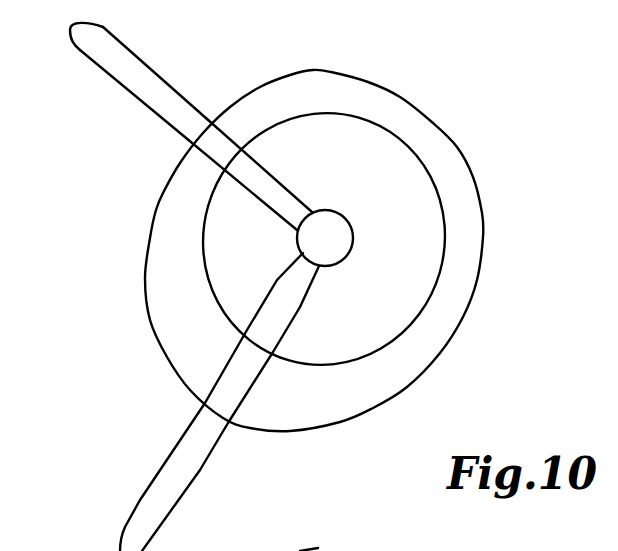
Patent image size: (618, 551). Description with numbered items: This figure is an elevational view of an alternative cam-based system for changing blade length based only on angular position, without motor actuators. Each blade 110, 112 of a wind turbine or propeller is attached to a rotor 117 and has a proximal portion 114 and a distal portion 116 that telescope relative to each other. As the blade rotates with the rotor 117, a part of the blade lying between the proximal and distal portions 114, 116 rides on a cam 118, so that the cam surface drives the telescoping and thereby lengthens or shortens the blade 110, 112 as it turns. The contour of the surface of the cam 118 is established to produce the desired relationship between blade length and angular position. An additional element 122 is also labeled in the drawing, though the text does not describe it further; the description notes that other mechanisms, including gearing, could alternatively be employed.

The blade 110 is at (247, 287).
The blade 112 is at (162, 445).
The proximal portion 114 is at (277, 126).
The distal portion 116 is at (267, 180).
The rotor 117 is at (403, 227).
The cam 118 is at (453, 140).
The lower member 122 is at (315, 550).